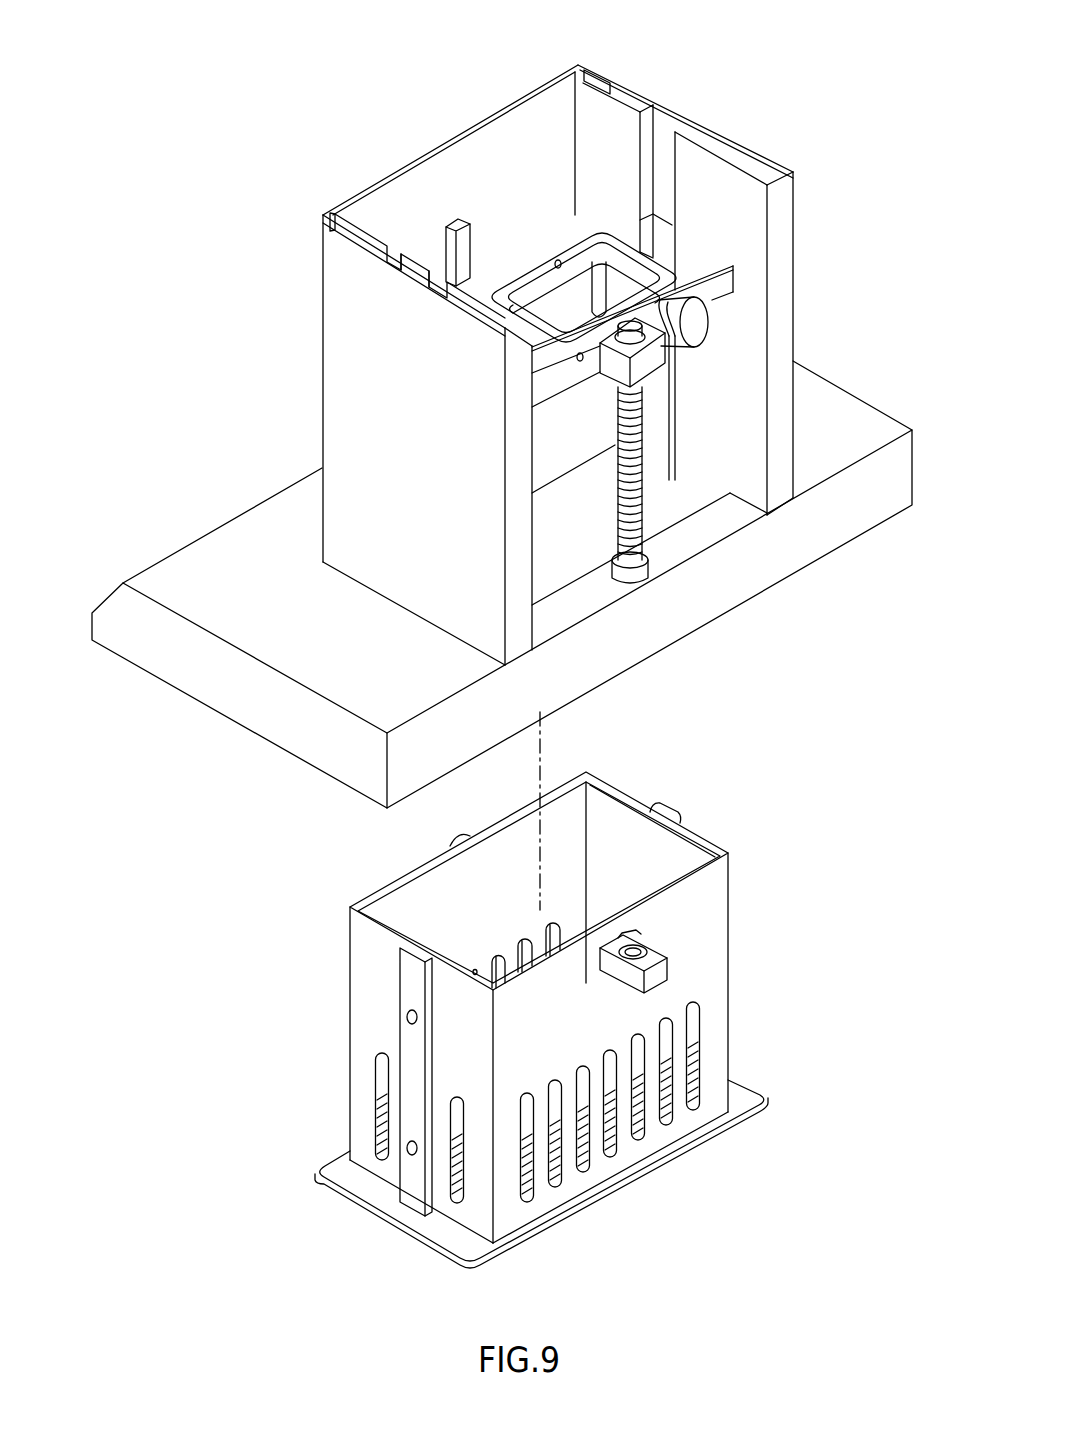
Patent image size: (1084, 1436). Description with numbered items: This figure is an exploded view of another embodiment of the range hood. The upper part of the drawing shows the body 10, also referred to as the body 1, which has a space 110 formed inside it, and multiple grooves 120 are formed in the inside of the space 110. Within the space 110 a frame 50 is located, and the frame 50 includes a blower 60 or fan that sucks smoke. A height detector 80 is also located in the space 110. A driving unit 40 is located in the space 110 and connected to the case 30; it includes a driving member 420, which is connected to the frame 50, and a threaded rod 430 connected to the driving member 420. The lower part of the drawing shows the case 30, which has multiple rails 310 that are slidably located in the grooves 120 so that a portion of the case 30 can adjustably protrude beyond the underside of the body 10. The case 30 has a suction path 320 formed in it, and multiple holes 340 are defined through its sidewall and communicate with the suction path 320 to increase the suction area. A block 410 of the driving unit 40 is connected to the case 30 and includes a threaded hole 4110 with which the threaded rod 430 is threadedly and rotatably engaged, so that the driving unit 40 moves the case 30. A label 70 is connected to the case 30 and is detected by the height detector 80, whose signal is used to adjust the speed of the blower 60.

The body 1 is at (714, 94).
The body 10 is at (784, 218).
The space 110 is at (620, 234).
The grooves 120 is at (667, 230).
The height detector 80 is at (460, 237).
The frame 50 is at (728, 280).
The driving unit 40 is at (683, 368).
The driving member 420 is at (692, 322).
The blower 60 is at (653, 407).
The threaded rod 430 is at (647, 515).
The label 70 is at (457, 838).
The case 30 is at (707, 893).
The suction path 320 is at (663, 858).
The rails 310 is at (408, 1030).
The holes 340 is at (385, 1150).
The block 410 is at (655, 933).
The threaded hole 4110 is at (650, 948).